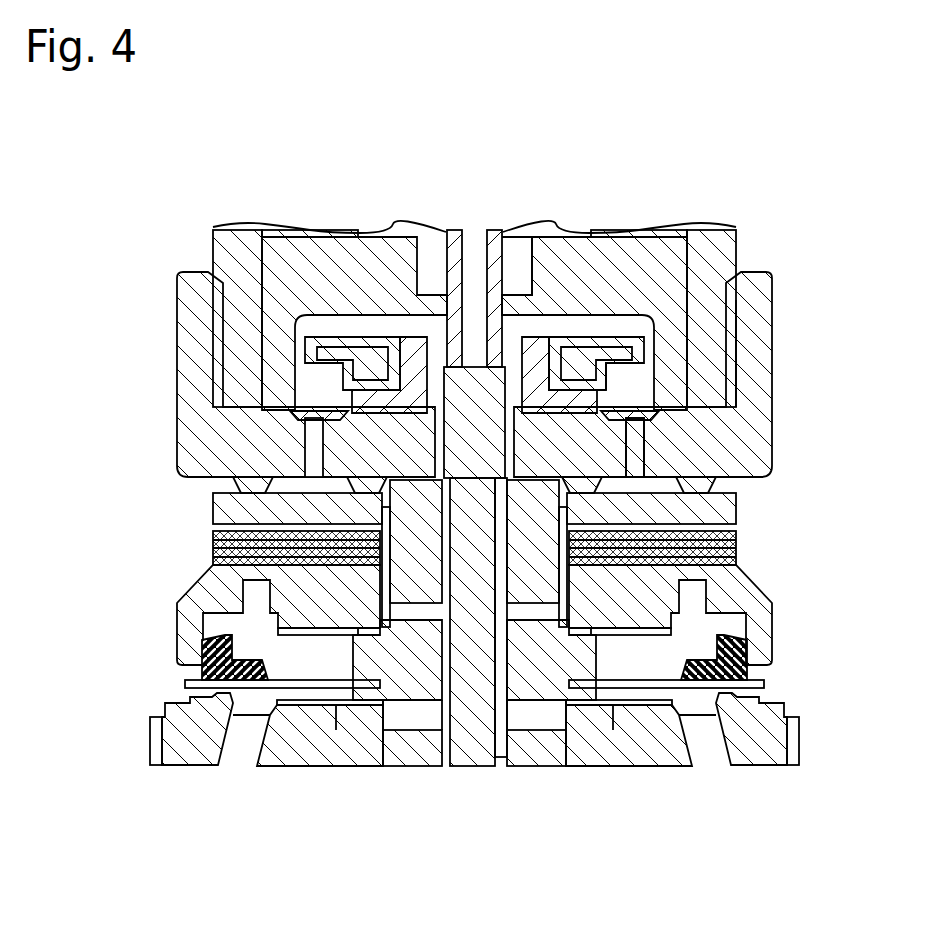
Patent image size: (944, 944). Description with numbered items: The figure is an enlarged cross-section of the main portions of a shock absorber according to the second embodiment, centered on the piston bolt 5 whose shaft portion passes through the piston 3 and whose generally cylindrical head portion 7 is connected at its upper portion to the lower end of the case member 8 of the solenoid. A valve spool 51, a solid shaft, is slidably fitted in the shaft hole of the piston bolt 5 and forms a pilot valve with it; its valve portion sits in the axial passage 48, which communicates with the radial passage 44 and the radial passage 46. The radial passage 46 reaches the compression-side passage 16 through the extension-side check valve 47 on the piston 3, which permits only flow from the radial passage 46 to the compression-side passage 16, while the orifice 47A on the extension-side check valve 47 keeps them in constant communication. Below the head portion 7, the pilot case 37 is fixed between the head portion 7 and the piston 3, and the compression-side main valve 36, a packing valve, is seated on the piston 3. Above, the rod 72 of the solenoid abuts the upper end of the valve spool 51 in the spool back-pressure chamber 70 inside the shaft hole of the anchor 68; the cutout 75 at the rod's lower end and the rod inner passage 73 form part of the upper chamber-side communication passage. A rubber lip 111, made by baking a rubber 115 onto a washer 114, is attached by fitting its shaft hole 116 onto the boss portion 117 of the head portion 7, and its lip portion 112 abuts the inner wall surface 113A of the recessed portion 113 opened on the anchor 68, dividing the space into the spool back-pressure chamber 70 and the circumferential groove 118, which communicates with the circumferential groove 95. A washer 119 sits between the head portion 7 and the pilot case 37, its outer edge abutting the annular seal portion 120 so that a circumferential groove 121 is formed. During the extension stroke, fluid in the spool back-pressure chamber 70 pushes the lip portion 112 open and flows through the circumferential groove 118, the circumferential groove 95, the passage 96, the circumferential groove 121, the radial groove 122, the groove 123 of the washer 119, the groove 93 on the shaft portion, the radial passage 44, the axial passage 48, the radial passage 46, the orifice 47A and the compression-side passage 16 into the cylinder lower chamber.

The piston 3 is at (150, 740).
The piston bolt 5 is at (410, 762).
The head portion 7 is at (777, 288).
The case member 8 is at (703, 250).
The compression-side passage 16 is at (240, 757).
The compression-side main valve 36 is at (777, 681).
The pilot case 37 is at (197, 622).
The radial passage 44 is at (742, 598).
The radial passage 46 is at (545, 765).
The extension-side check valve 47 is at (300, 768).
The orifice 47A is at (691, 760).
The axial passage 48 is at (501, 757).
The valve spool 51 is at (473, 768).
The anchor 68 is at (263, 262).
The spool back-pressure chamber 70 is at (290, 285).
The rod 72 is at (491, 293).
The rod inner passage 73 is at (468, 260).
The cutout 75 is at (520, 295).
The groove 93 is at (739, 510).
The circumferential groove 95 is at (722, 390).
The passage 96 is at (652, 430).
The rubber lip 111 is at (597, 335).
The lip portion 112 is at (650, 340).
The recessed portion 113 is at (625, 330).
The inner wall surface 113A is at (652, 370).
The washer 114 is at (325, 327).
The rubber 115 is at (365, 363).
The shaft hole 116 is at (383, 330).
The boss portion 117 is at (535, 320).
The circumferential groove 118 is at (315, 386).
The washer 119 is at (227, 503).
The annular seal portion 120 is at (253, 485).
The circumferential groove 121 is at (312, 460).
The radial groove 122 is at (289, 480).
The groove 123 is at (227, 537).